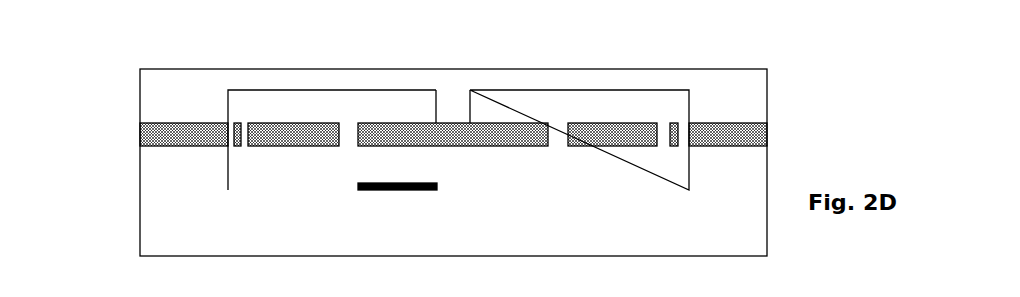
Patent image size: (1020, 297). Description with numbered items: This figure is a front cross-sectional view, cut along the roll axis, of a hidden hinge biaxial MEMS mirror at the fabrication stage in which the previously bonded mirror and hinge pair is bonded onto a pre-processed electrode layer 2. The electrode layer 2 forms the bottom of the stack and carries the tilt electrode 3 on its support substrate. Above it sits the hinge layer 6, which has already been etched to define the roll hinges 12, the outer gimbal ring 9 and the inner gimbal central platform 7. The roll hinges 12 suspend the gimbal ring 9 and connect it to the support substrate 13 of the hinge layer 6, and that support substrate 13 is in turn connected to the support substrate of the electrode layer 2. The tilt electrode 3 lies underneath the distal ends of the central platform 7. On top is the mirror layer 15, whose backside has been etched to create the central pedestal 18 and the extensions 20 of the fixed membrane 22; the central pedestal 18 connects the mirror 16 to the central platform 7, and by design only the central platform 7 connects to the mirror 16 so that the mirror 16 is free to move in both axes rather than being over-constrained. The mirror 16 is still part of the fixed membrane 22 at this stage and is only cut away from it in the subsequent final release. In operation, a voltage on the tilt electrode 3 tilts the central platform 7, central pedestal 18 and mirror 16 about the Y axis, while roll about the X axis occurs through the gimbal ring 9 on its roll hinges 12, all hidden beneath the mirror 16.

The electrode layer 2 is at (127, 178).
The tilt electrode 3 is at (377, 182).
The hinge layer 6 is at (127, 137).
The central platform 7 is at (492, 135).
The gimbal ring 9 is at (317, 123).
The roll hinges 12 is at (240, 123).
The support substrate 13 is at (163, 147).
The mirror layer 15 is at (130, 117).
The mirror 16 is at (460, 69).
The central pedestal 18 is at (464, 111).
The extensions 20 is at (162, 80).
The fixed membrane 22 is at (360, 69).